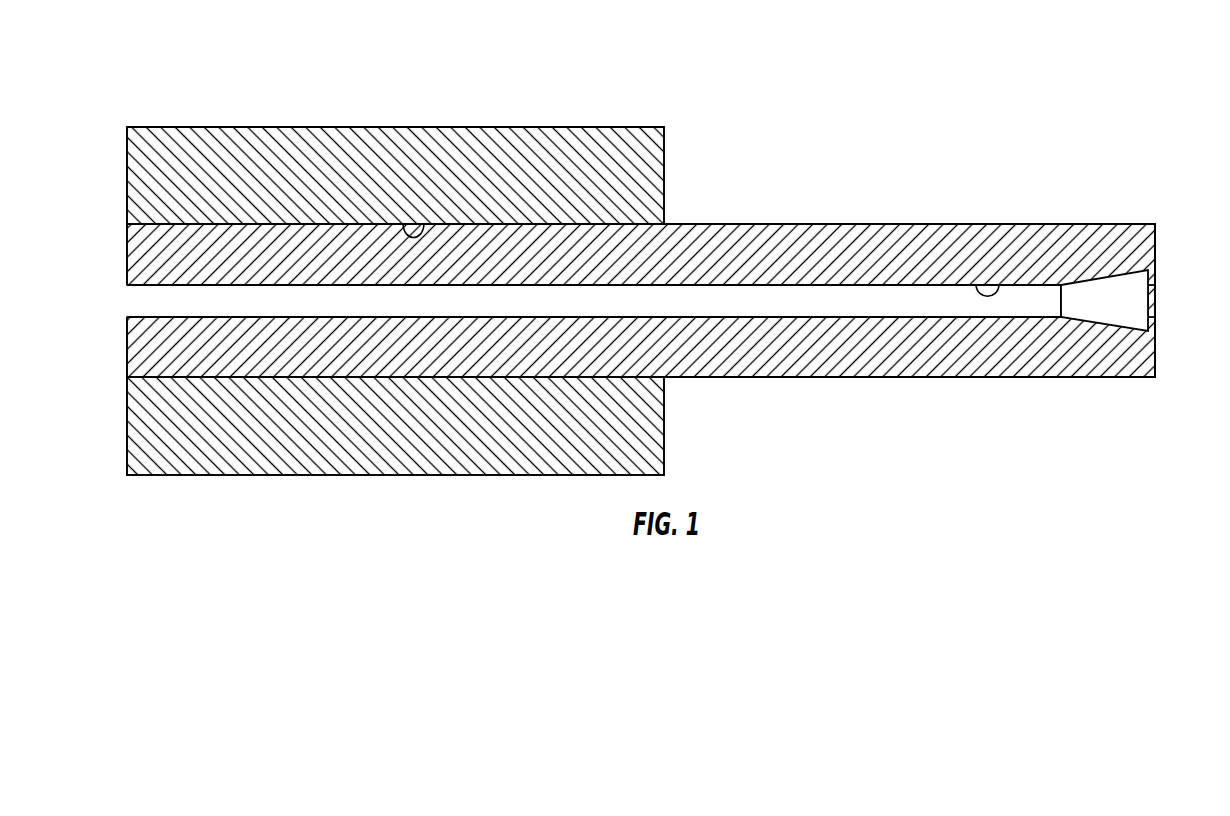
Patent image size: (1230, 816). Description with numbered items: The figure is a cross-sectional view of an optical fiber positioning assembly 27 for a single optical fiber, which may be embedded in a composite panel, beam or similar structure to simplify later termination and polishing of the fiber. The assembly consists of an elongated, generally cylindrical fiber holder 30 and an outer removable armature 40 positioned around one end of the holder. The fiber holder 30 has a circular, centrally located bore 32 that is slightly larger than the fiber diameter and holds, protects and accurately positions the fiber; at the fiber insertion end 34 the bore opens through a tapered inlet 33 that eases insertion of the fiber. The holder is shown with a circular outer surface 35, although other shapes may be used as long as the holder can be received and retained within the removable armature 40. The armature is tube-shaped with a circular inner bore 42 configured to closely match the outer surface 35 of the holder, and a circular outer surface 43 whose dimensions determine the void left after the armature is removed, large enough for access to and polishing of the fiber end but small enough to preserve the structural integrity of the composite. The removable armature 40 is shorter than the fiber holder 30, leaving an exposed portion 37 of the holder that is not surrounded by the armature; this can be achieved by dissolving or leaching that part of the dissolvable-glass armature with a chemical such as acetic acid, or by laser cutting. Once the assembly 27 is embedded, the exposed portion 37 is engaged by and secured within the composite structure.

The optical fiber positioning assembly 27 is at (843, 100).
The fiber holder 30 is at (902, 224).
The bore 32 is at (999, 285).
The tapered inlet 33 is at (1107, 278).
The fiber insertion end 34 is at (1157, 243).
The outer surface 35 is at (716, 224).
The exposed portion 37 is at (818, 377).
The removable armature 40 is at (216, 127).
The inner bore 42 is at (424, 224).
The outer surface 43 is at (337, 127).